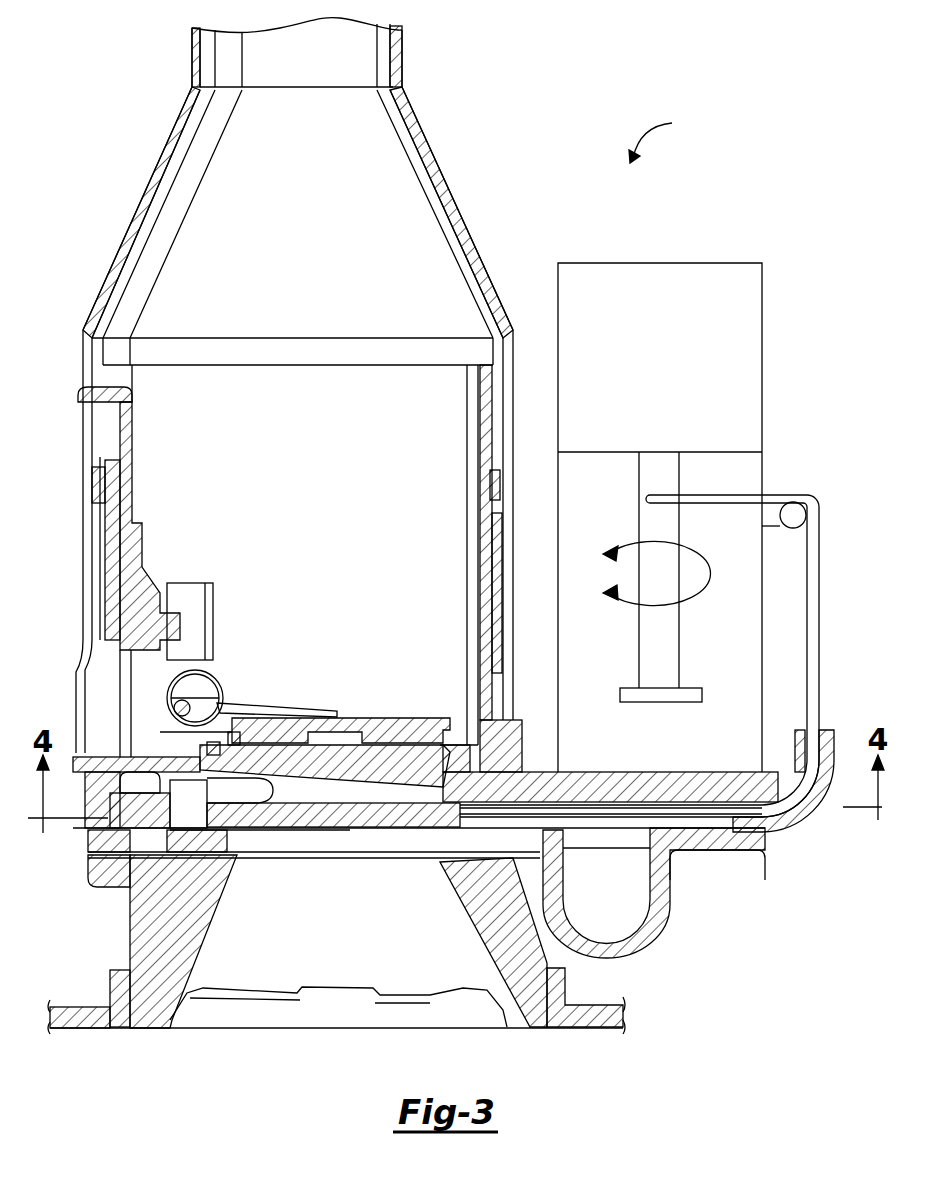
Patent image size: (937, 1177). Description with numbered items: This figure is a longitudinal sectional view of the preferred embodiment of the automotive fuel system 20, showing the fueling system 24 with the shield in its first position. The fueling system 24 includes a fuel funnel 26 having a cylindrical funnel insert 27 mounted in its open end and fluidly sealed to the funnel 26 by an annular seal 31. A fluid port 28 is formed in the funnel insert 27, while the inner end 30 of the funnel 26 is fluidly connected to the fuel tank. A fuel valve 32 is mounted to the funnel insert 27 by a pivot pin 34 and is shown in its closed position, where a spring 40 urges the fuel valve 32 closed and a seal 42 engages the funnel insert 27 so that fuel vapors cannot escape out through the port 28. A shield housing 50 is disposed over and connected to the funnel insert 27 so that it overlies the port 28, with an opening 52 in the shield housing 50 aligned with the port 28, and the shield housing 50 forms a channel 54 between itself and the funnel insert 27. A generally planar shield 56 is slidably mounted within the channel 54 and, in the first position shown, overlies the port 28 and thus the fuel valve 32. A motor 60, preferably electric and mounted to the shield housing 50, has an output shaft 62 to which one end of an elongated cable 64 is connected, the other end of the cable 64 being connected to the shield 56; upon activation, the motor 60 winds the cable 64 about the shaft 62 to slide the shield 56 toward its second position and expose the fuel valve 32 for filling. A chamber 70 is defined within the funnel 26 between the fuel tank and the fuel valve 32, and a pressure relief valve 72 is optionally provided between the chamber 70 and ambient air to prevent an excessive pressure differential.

The automotive fuel system 20 is at (668, 136).
The fueling system 24 is at (73, 515).
The fuel funnel 26 is at (452, 188).
The funnel insert 27 is at (127, 423).
The fluid port 28 is at (213, 747).
The inner end of the funnel 30 is at (392, 63).
The annular seal 31 is at (91, 476).
The fuel valve 32 is at (408, 713).
The pivot pin 34 is at (188, 700).
The spring 40 is at (203, 672).
The seal 42 is at (455, 742).
The shield housing 50 is at (97, 835).
The opening 52 is at (228, 842).
The channel 54 is at (127, 857).
The shield 56 is at (352, 830).
The motor 60 is at (762, 353).
The output shaft 62 is at (690, 640).
The cable 64 is at (818, 570).
The chamber 70 is at (323, 428).
The pressure relief valve 72 is at (148, 768).